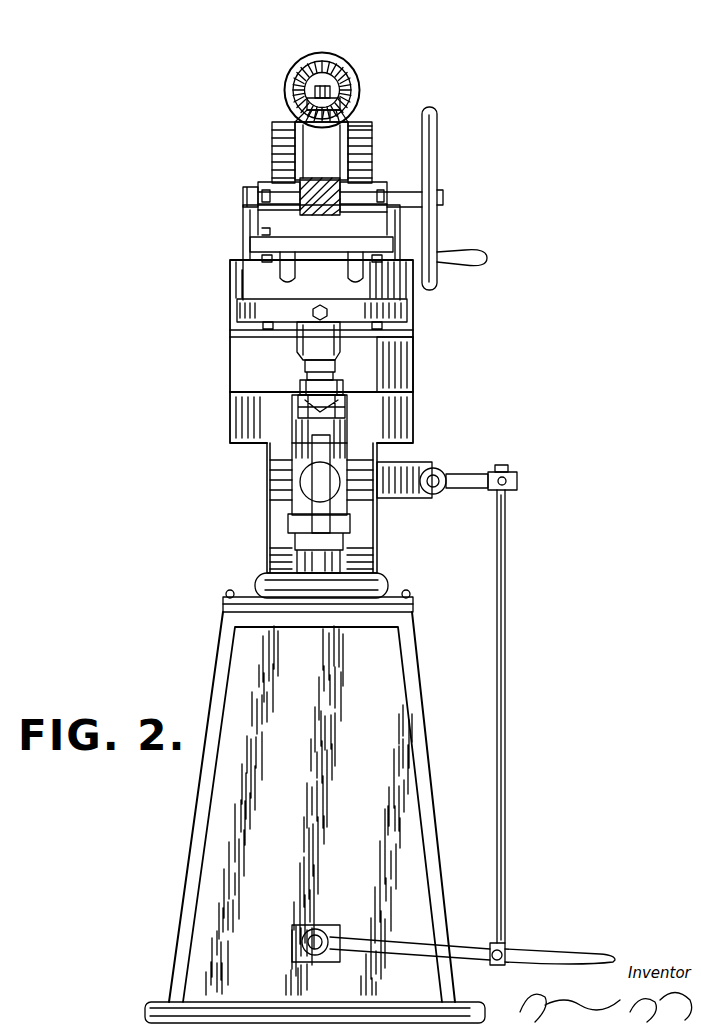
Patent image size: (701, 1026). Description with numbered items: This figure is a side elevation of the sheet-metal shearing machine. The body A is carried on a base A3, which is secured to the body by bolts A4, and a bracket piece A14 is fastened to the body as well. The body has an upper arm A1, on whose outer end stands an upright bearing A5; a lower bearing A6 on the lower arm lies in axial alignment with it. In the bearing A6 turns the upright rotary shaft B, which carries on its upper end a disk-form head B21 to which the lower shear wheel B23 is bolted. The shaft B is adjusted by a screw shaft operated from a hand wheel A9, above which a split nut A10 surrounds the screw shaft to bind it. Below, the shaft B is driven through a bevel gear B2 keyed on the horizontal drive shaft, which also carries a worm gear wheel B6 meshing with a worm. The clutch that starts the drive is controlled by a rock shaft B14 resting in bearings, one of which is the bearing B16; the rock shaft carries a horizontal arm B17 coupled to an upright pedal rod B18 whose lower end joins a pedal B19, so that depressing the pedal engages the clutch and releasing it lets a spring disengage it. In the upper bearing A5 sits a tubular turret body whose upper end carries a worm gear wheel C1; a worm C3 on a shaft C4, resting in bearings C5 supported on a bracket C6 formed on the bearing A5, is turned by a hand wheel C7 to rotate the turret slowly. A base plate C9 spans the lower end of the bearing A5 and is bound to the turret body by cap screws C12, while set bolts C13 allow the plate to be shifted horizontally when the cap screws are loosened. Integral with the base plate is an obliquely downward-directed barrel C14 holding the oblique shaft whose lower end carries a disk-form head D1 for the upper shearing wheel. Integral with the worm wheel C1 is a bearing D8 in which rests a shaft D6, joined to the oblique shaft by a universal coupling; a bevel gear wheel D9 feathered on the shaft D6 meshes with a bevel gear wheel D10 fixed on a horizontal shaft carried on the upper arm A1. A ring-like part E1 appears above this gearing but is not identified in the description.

The ring gear E1 is at (320, 53).
The bevel gear wheel D10 is at (332, 91).
The shaft D6 is at (330, 138).
The bevel gear wheel D9 is at (285, 120).
The bearing D8 is at (355, 127).
The upper arm A1 is at (272, 145).
The bearings C5 is at (395, 190).
The worm C3 is at (300, 195).
The worm gear wheel C1 is at (245, 190).
The worm shaft C4 is at (435, 160).
The hand wheel C7 is at (437, 174).
The bracket C6 is at (255, 245).
The upright bearing A5 is at (258, 282).
The base plate C9 is at (415, 305).
The cap screw C12 is at (420, 328).
The set bolt C13 is at (325, 296).
The bearing or barrel C14 is at (300, 343).
The disk-form head D1 is at (410, 356).
The body A is at (413, 368).
The lower shear wheel B23 is at (290, 380).
The disk-form head B21 is at (347, 402).
The bearing A6 is at (290, 435).
The upright rotary shaft B is at (288, 420).
The worm gear wheel B6 is at (273, 470).
The bevel gear B2 is at (275, 495).
The split nut A10 is at (262, 560).
The hand wheel A9 is at (255, 582).
The bolts A4 is at (415, 605).
The bracket piece A14 is at (224, 600).
The base A3 is at (200, 835).
The bearing B16 is at (447, 467).
The horizontal arm B17 is at (480, 488).
The rock shaft B14 is at (455, 478).
The pedal rod B18 is at (505, 737).
The pedal B19 is at (475, 930).